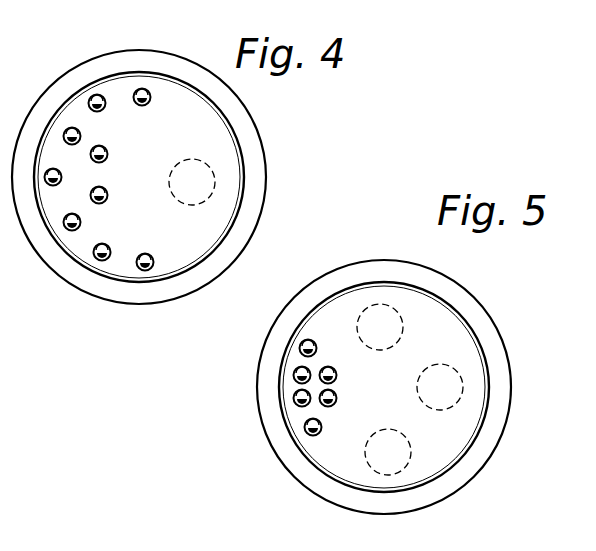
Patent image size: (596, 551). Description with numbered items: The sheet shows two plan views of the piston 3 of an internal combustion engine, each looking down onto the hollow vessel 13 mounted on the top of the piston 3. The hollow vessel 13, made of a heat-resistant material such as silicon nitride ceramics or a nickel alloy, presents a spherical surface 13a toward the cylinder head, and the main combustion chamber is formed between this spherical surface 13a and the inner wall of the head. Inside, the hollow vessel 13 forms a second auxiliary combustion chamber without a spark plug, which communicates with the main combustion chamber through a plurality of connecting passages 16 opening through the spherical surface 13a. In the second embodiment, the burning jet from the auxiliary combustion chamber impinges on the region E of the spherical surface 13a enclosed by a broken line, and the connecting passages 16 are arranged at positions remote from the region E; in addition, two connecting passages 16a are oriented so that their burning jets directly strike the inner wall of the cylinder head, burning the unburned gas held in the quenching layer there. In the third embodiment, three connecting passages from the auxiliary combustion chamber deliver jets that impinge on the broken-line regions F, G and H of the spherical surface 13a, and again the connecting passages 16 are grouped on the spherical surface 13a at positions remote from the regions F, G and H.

In FIG. 4, the piston 3 is at (207, 270).
In FIG. 5, the piston 3 is at (477, 462).
In FIG. 4, the hollow vessel 13 is at (215, 230).
In FIG. 5, the hollow vessel 13 is at (470, 420).
In FIG. 4, the spherical surface 13a is at (200, 131).
In FIG. 5, the spherical surface 13a is at (396, 389).
In FIG. 4, the connecting passages 16 is at (97, 94).
In FIG. 5, the connecting passages 16 is at (300, 346).
In FIG. 4, the connecting passages 16a is at (106, 153).
In FIG. 4, the region E is at (216, 182).
In FIG. 5, the region F is at (398, 309).
In FIG. 5, the region G is at (464, 386).
In FIG. 5, the region H is at (394, 470).